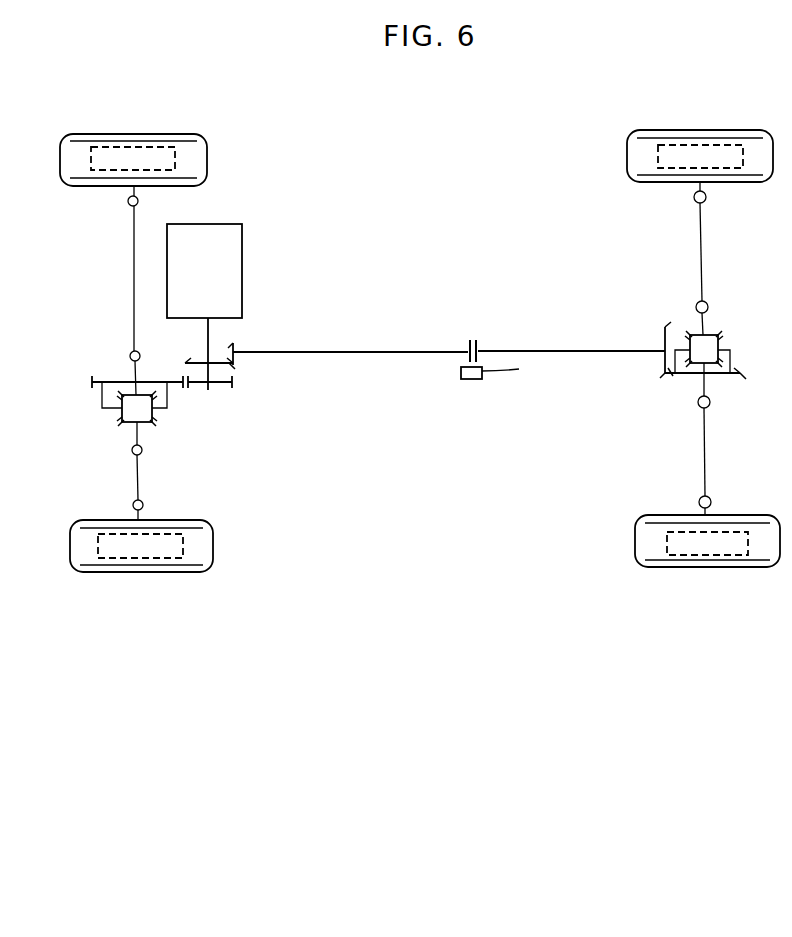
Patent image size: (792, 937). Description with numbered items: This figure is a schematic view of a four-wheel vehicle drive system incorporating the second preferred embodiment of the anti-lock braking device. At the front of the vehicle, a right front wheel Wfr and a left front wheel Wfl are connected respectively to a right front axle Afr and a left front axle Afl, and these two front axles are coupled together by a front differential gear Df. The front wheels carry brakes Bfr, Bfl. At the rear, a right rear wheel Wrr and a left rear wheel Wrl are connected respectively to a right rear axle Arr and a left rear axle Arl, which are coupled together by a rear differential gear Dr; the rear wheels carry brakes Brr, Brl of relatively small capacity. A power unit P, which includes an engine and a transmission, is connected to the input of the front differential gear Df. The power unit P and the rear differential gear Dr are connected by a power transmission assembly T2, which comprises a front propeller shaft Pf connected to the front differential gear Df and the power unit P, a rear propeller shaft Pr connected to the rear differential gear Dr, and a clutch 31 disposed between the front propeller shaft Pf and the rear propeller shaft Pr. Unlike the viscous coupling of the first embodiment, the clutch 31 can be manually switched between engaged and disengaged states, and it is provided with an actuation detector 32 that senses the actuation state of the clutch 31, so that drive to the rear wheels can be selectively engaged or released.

The right front wheel Wfr is at (85, 140).
The brake Bfr is at (155, 142).
The right front axle Afr is at (132, 274).
The front differential gear Df is at (153, 415).
The left front axle Afl is at (135, 478).
The left front wheel Wfl is at (100, 573).
The brake Bfl is at (173, 566).
The power unit P is at (209, 285).
The front propeller shaft Pf is at (333, 350).
The clutch 31 is at (465, 343).
The actuation detector 32 is at (471, 380).
The rear propeller shaft Pr is at (584, 350).
The right rear wheel Wrr is at (657, 131).
The brake Brr is at (727, 134).
The right rear axle Arr is at (703, 245).
The rear differential gear Dr is at (722, 343).
The left rear axle Arl is at (708, 436).
The left rear wheel Wrl is at (675, 568).
The brake Brl is at (735, 561).
The power transmission assembly T2 is at (407, 388).